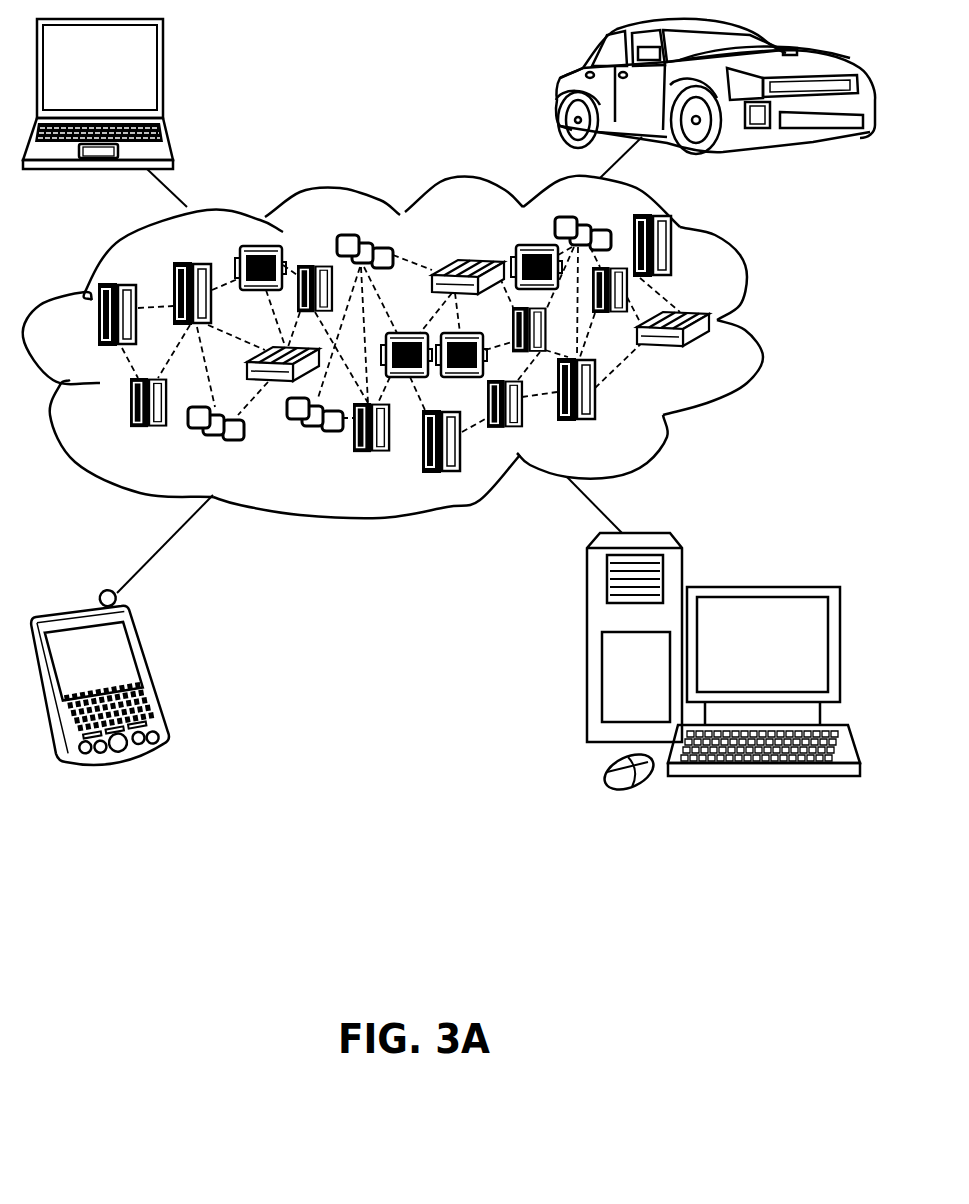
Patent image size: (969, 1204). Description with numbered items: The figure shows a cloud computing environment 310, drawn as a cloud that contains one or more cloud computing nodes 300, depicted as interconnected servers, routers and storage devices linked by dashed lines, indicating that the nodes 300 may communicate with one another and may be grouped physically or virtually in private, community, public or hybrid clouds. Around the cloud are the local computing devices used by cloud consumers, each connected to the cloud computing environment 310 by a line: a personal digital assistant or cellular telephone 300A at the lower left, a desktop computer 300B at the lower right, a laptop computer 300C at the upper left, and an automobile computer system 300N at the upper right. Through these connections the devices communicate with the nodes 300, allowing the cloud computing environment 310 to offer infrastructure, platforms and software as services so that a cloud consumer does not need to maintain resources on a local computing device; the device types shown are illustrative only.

The cloud computing nodes 300 is at (424, 347).
The cloud computing environment 310 is at (760, 323).
The personal digital assistant (PDA) or cellular telephone 300A is at (153, 672).
The desktop computer 300B is at (760, 588).
The laptop computer 300C is at (163, 74).
The automobile computer system 300N is at (558, 89).